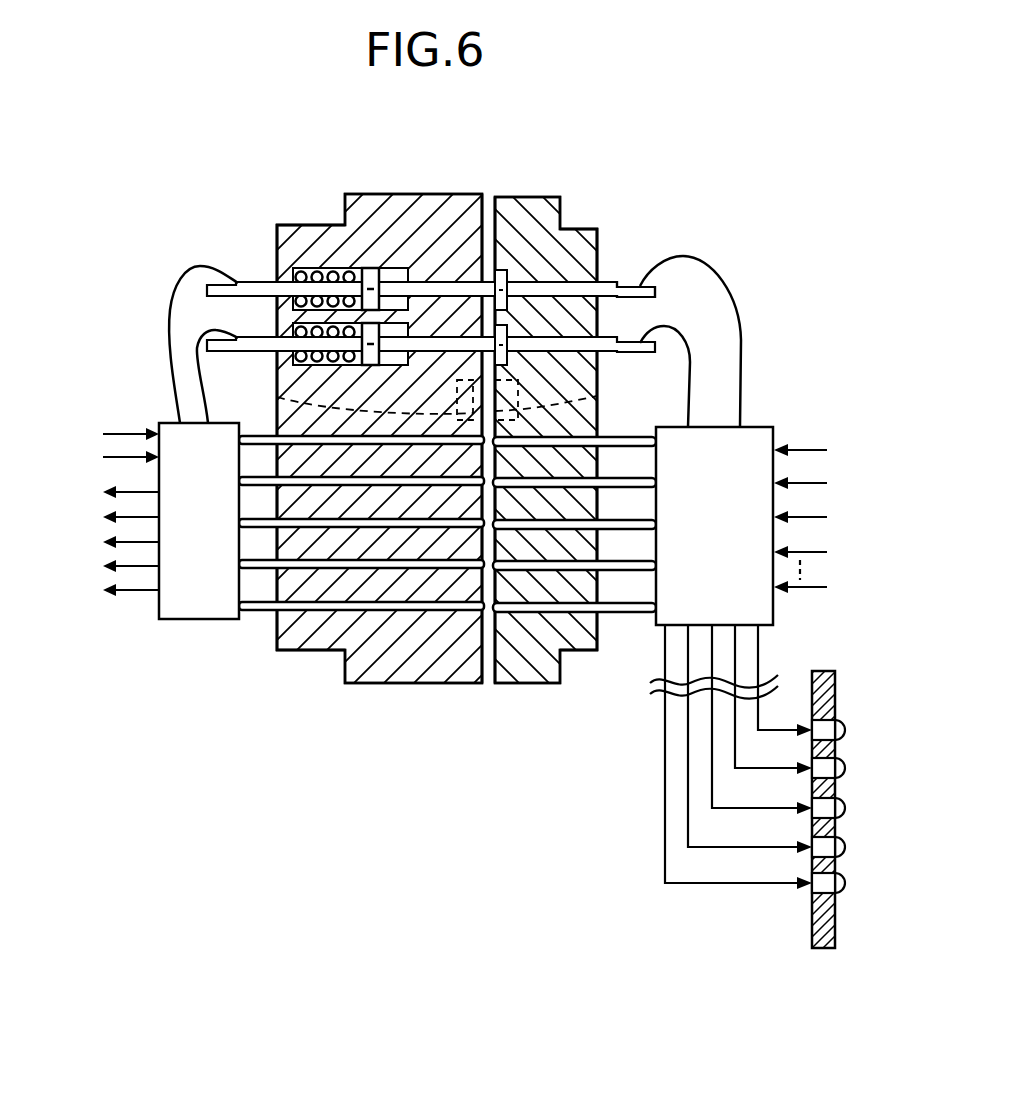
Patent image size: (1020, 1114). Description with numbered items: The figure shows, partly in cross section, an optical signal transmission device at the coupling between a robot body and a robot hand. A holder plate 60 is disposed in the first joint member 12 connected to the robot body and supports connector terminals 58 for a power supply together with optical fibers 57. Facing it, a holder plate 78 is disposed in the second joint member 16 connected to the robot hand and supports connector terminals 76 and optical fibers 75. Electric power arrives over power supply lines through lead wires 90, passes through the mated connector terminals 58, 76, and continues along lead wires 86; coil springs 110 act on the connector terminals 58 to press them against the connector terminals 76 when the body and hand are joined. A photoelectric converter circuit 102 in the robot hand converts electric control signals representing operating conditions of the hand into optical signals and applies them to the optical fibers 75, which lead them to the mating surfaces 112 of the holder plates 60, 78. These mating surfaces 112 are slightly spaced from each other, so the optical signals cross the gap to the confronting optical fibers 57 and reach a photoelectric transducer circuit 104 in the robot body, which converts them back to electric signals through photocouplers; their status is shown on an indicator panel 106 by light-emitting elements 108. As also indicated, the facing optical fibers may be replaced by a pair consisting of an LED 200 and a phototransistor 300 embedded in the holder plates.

The first joint member 12 is at (306, 697).
The second joint member 16 is at (551, 725).
The optical fibers 57 is at (278, 650).
The connector terminals 58 is at (262, 283).
The holder plate 60 is at (400, 672).
The optical fibers 75 is at (577, 653).
The connector terminals 76 is at (608, 287).
The holder plate 78 is at (512, 672).
The lead wires 86 is at (752, 322).
The lead wires 90 is at (158, 343).
The photoelectric converter circuit 102 is at (732, 533).
The photoelectric transducer circuit 104 is at (218, 531).
The indicator panel 106 is at (825, 697).
The light-emitting elements 108 is at (825, 887).
The coil springs 110 is at (305, 270).
The mating surfaces 112 is at (478, 697).
The LED 200 is at (598, 396).
The phototransistor 300 is at (272, 394).